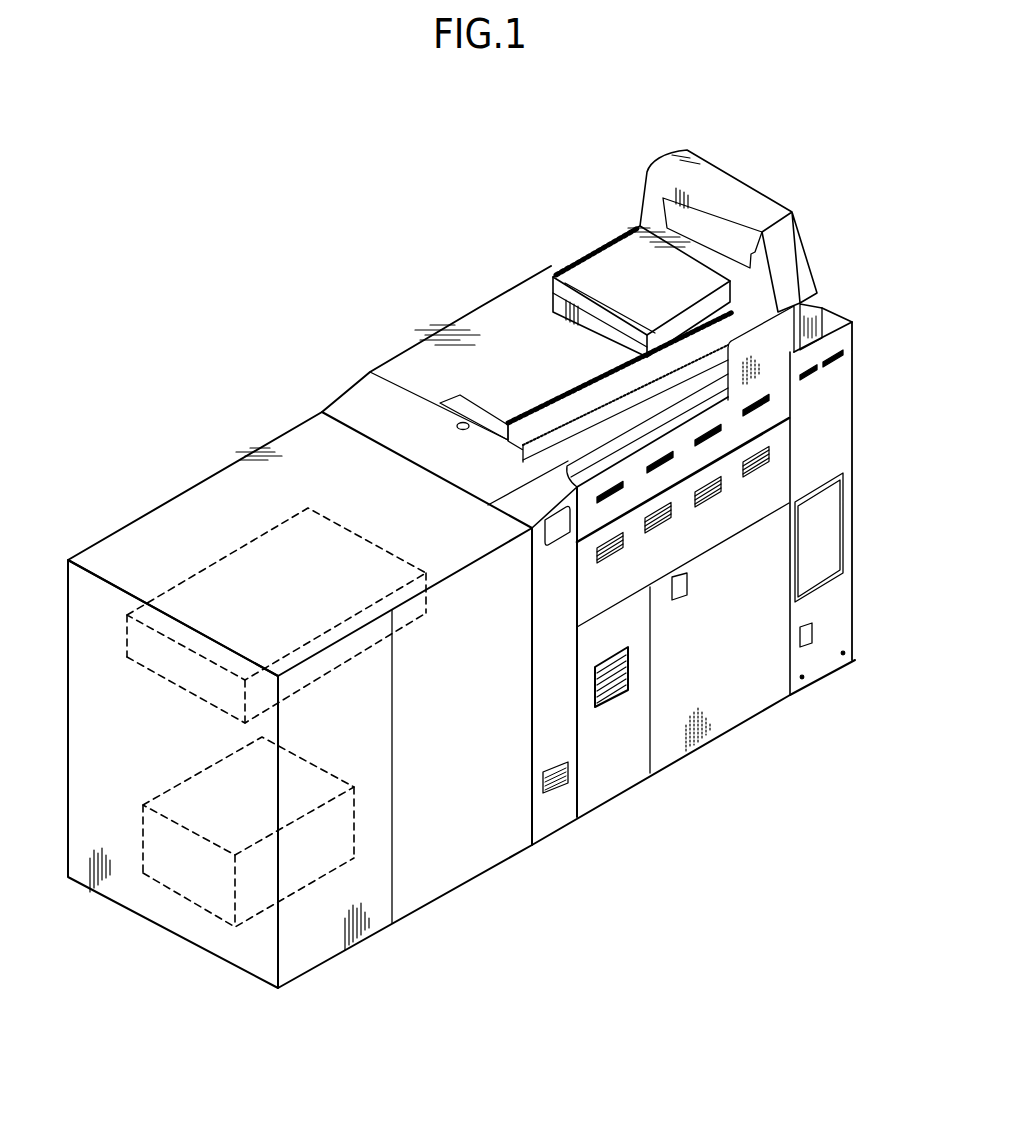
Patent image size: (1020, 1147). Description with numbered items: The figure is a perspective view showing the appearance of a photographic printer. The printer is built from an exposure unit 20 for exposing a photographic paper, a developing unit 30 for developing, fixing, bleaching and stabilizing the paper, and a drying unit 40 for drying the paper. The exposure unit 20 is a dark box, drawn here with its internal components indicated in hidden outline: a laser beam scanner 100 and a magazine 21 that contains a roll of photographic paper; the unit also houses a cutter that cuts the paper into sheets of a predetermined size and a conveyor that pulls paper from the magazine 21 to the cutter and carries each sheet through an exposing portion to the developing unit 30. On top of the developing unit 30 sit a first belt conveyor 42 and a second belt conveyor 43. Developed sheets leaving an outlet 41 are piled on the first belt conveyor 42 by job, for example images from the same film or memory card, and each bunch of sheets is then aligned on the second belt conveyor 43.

The laser beam scanner 100 is at (219, 540).
The exposure unit 20 is at (489, 884).
The magazine 21 is at (190, 888).
The developing unit 30 is at (748, 731).
The drying unit 40 is at (863, 572).
The outlet 41 is at (705, 231).
The first belt conveyor 42 is at (610, 282).
The second belt conveyor 43 is at (740, 324).